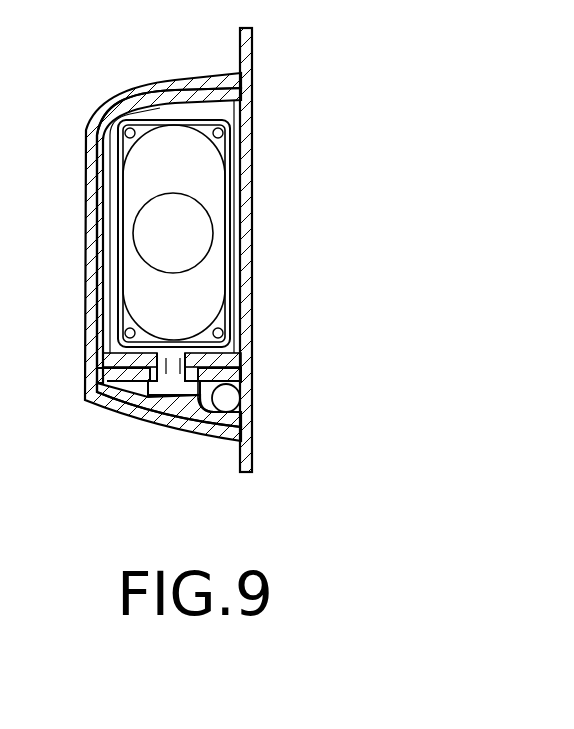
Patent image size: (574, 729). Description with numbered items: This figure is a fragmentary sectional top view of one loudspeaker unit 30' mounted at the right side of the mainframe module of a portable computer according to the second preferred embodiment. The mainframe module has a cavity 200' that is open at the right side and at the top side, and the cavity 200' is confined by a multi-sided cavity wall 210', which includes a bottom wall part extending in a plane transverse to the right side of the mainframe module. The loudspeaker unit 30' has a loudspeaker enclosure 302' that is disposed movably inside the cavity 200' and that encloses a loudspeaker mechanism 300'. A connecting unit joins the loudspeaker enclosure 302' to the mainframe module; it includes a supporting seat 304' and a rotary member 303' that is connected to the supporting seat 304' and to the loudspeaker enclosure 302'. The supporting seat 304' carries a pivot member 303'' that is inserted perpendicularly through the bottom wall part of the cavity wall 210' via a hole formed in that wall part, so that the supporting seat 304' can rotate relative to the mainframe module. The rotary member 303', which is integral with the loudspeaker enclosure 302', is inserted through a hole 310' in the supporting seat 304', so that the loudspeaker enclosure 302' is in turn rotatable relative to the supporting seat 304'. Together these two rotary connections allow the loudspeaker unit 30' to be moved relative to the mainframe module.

The loudspeaker unit 30' is at (260, 261).
The cavity 200' is at (163, 227).
The cavity wall 210' is at (160, 220).
The loudspeaker mechanism 300' is at (246, 232).
The loudspeaker enclosure 302' is at (307, 250).
The rotary member 303' is at (222, 438).
The pivot member 303'' is at (293, 382).
The supporting seat 304' is at (289, 349).
The hole 310' is at (147, 431).